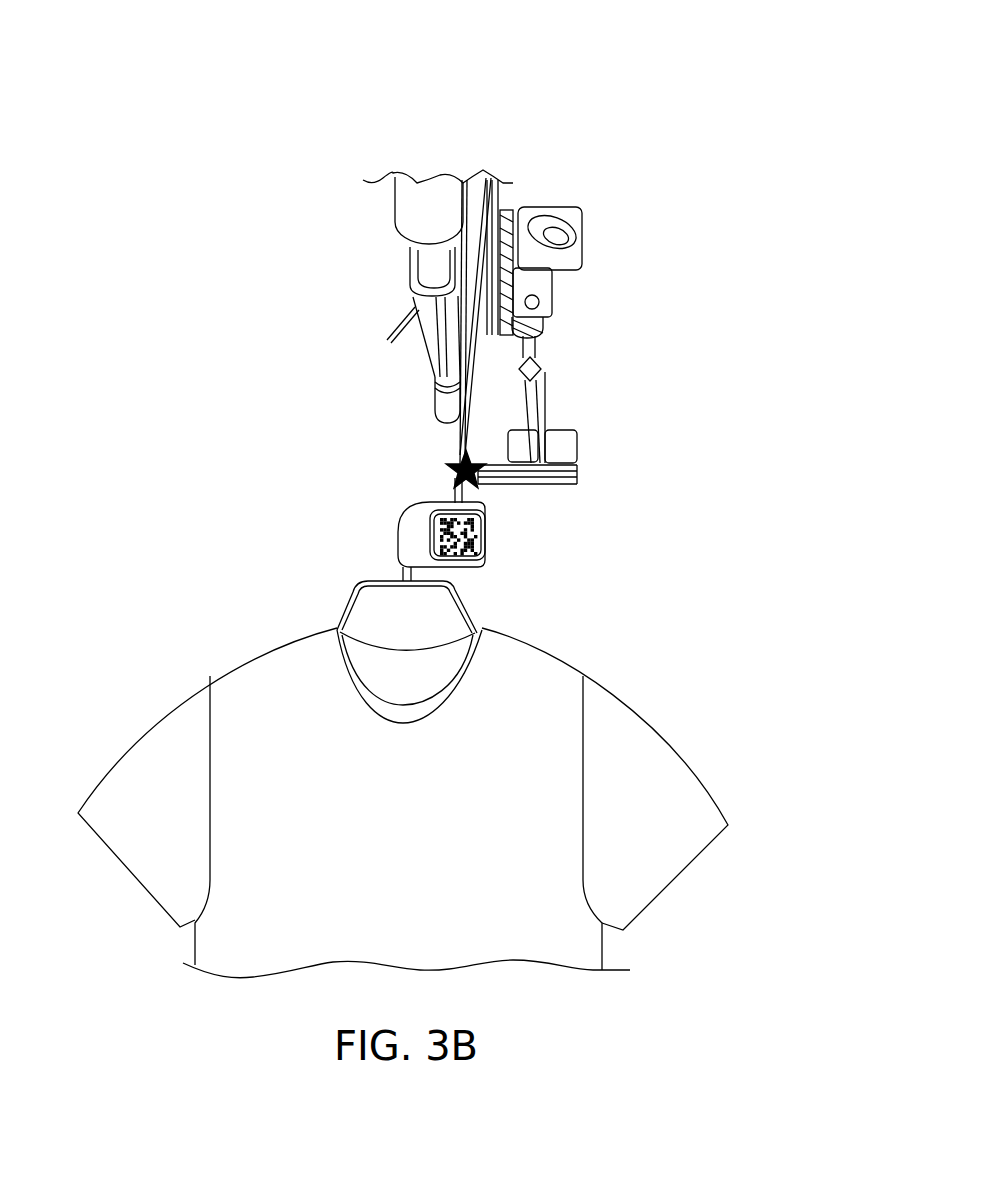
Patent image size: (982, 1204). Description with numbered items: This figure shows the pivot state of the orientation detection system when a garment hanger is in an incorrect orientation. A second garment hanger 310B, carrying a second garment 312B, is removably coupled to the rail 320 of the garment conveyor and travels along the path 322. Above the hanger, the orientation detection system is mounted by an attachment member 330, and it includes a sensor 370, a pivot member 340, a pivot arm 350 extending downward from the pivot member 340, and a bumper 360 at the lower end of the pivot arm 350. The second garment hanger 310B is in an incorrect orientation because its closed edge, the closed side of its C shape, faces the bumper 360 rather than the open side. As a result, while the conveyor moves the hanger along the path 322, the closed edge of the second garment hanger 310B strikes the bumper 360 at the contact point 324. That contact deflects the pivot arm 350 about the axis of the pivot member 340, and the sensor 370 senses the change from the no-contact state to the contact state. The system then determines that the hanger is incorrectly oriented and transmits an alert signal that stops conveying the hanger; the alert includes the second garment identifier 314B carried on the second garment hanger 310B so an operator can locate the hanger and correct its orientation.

The attachment member 330 is at (545, 192).
The sensor 370 is at (521, 253).
The rail 320 is at (397, 238).
The second garment hanger 310B is at (393, 318).
The path 322 is at (253, 378).
The pivot member 340 is at (542, 296).
The pivot arm 350 is at (548, 391).
The second garment identifier 314B is at (400, 530).
The bumper 360 is at (548, 487).
The second garment 312B is at (314, 694).
The contact point 324 is at (489, 496).